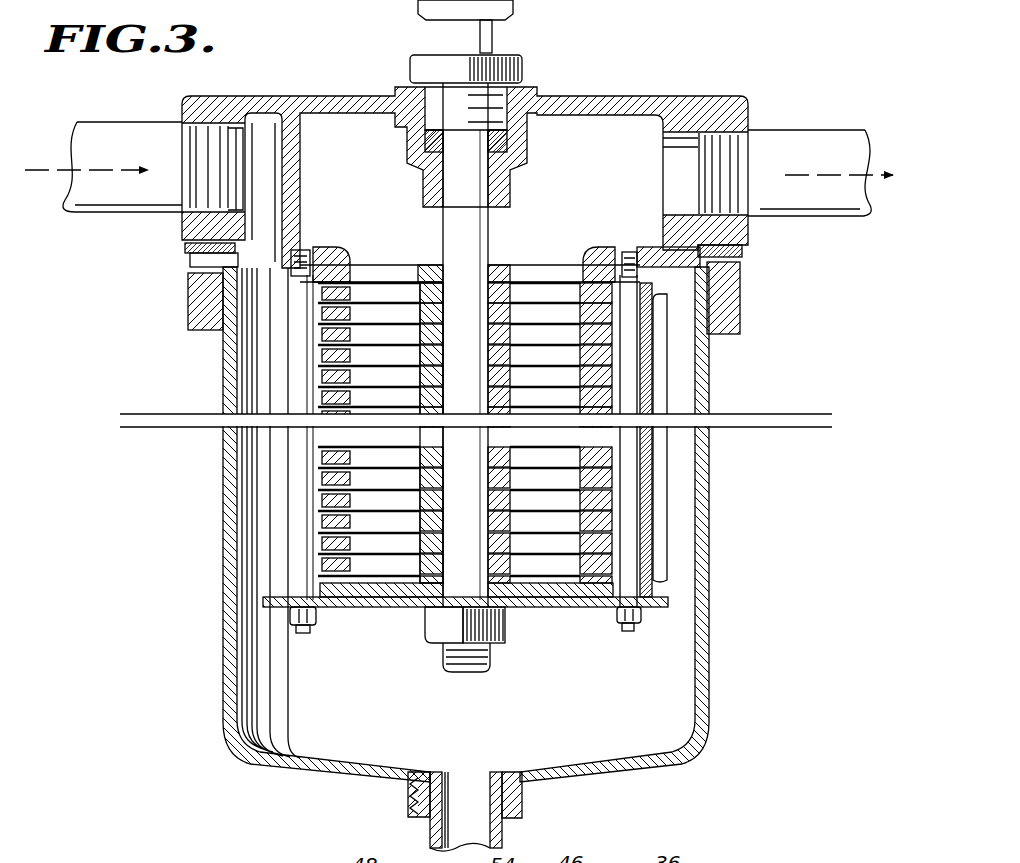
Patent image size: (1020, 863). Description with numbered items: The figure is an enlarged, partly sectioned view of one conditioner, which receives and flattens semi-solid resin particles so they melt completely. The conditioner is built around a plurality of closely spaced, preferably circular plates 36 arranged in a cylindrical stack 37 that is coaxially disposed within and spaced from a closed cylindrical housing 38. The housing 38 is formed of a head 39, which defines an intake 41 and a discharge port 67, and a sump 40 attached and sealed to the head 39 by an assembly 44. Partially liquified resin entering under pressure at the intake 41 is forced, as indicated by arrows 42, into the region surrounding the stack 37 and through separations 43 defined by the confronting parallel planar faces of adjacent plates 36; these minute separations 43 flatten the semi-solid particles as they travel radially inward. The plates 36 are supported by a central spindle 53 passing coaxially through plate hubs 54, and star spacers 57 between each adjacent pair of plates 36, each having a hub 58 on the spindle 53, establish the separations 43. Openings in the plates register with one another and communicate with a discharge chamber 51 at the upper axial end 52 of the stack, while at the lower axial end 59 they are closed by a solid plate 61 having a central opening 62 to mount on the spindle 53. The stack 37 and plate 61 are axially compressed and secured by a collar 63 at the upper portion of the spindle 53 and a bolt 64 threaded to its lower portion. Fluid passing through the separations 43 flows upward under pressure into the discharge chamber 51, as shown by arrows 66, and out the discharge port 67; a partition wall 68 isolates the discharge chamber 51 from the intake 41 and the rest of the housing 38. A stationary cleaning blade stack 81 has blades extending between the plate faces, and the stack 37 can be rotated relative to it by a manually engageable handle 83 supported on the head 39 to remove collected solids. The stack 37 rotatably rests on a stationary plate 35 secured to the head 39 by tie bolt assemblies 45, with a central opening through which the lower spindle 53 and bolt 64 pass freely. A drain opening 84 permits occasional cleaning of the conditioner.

The stationary plate 35 is at (567, 604).
The plates 36 is at (390, 540).
The cylindrical stack 37 is at (667, 498).
The closed cylindrical chamber or housing 38 is at (220, 375).
The head 39 is at (190, 108).
The sump 40 is at (223, 664).
The intake 41 is at (267, 288).
The arrows 42 is at (253, 383).
The separations 43 is at (330, 447).
The assembly 44 is at (755, 277).
The tie bolt assemblies 45 is at (300, 630).
The discharge chamber 51 is at (572, 153).
The upper axial end 52 is at (563, 266).
The central spindle 53 is at (472, 503).
The plate hubs 54 is at (445, 337).
The star spacers 57 is at (345, 325).
The hub 58 is at (441, 336).
The lower axial end 59 is at (310, 582).
The solid plate 61 is at (355, 597).
The central opening 62 is at (447, 597).
The collar 63 is at (503, 282).
The bolt 64 is at (500, 628).
The arrows 66 is at (543, 290).
The discharge port 67 is at (680, 145).
The partition wall 68 is at (298, 162).
The cleaning blade stack 81 is at (660, 552).
The handle 83 is at (583, 0).
The drain opening 84 is at (486, 792).